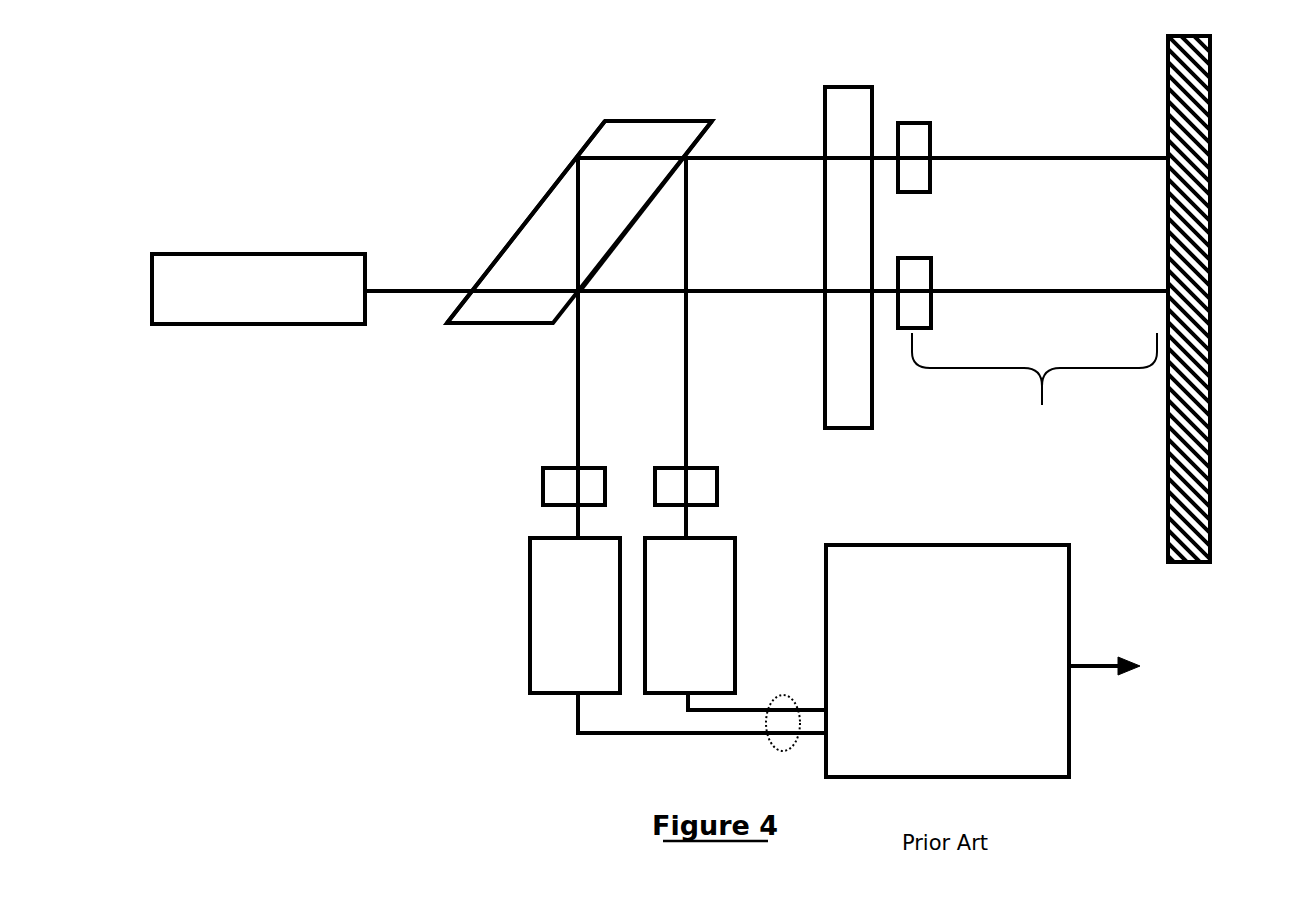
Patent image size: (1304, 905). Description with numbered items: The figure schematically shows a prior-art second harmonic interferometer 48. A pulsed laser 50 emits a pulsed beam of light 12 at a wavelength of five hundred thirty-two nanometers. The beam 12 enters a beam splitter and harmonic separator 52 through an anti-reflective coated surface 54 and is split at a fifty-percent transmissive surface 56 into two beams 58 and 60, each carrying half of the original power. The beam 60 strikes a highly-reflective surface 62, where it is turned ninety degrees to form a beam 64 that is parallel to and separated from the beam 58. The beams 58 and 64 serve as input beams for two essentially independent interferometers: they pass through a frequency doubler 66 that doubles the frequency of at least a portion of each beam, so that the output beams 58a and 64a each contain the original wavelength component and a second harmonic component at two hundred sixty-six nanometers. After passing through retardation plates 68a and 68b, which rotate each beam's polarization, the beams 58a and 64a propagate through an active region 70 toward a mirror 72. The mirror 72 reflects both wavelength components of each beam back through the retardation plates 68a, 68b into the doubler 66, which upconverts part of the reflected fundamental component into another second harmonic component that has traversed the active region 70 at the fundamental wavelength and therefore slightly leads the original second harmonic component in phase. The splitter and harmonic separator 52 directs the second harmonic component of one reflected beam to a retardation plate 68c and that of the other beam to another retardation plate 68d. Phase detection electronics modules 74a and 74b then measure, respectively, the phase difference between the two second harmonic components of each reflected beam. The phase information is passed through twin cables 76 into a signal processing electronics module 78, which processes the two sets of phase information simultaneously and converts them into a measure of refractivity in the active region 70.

The second harmonic interferometer 48 is at (328, 58).
The pulsed laser 50 is at (258, 289).
The pulsed beam of light 12 is at (404, 295).
The beam splitter and harmonic separator 52 is at (650, 140).
The anti-reflective coated surface 54 is at (477, 277).
The 50% transmissive surface 56 is at (584, 288).
The beam 58 is at (617, 297).
The output beam 58a is at (1033, 300).
The beam 60 is at (578, 264).
The highly-reflective surface 62 is at (578, 155).
The beam 64 is at (790, 163).
The output beam 64a is at (1052, 158).
The frequency doubler 66 is at (848, 239).
The retardation plate 68a is at (912, 123).
The retardation plate 68b is at (932, 278).
The retardation plate 68c is at (547, 490).
The retardation plate 68d is at (720, 491).
The active region 70 is at (1034, 388).
The mirror 72 is at (1220, 307).
The phase detection electronics module 74a is at (527, 590).
The phase detection electronics module 74b is at (738, 557).
The twin cables 76 is at (787, 696).
The signal processing electronics module 78 is at (983, 661).